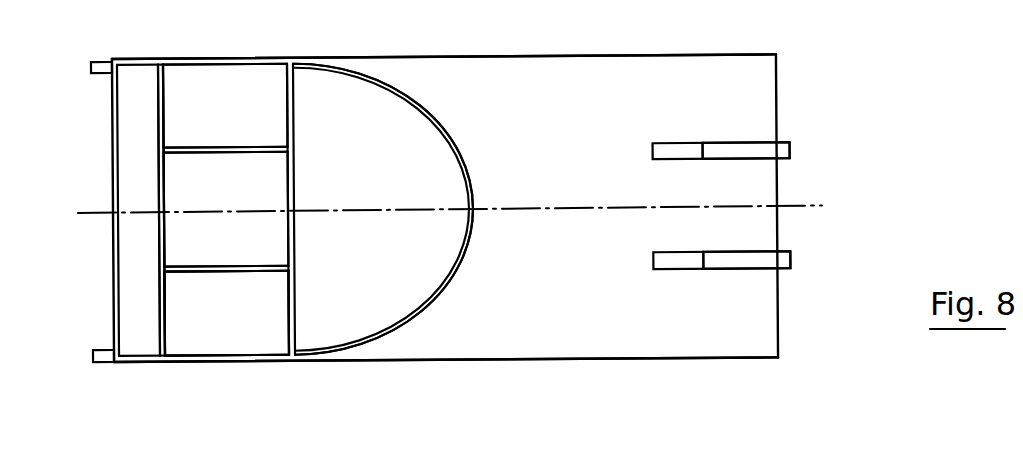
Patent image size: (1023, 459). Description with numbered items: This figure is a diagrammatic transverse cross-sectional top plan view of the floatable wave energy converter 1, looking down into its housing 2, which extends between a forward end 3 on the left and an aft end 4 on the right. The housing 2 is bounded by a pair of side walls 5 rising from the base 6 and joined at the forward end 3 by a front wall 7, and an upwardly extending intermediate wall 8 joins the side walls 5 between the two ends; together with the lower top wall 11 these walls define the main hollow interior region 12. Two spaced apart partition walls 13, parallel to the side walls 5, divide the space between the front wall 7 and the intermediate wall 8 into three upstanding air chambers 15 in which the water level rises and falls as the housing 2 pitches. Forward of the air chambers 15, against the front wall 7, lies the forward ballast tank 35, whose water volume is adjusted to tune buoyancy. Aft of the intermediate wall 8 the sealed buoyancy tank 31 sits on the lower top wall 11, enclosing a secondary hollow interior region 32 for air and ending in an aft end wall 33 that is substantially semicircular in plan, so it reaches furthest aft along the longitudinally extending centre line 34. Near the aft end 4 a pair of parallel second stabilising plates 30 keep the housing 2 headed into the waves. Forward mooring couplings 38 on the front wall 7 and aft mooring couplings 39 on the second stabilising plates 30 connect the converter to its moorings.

The wave energy converter 1 is at (846, 74).
The housing 2 is at (487, 58).
The forward end 3 is at (112, 267).
The aft end 4 is at (779, 308).
The side walls 5 is at (590, 57).
The base 6 is at (213, 340).
The front wall 7 is at (112, 118).
The intermediate wall 8 is at (297, 126).
The lower top wall 11 is at (590, 348).
The main hollow interior region 12 is at (195, 333).
The partition walls 13 is at (205, 148).
The air chambers 15 is at (193, 88).
The second stabilising plates 30 is at (670, 143).
The buoyancy tank 31 is at (476, 180).
The secondary hollow interior region 32 is at (443, 137).
The aft end wall 33 is at (468, 272).
The longitudinally extending centre line 34 is at (97, 212).
The forward ballast tank 35 is at (137, 141).
The forward mooring couplings 38 is at (90, 65).
The aft mooring couplings 39 is at (792, 147).